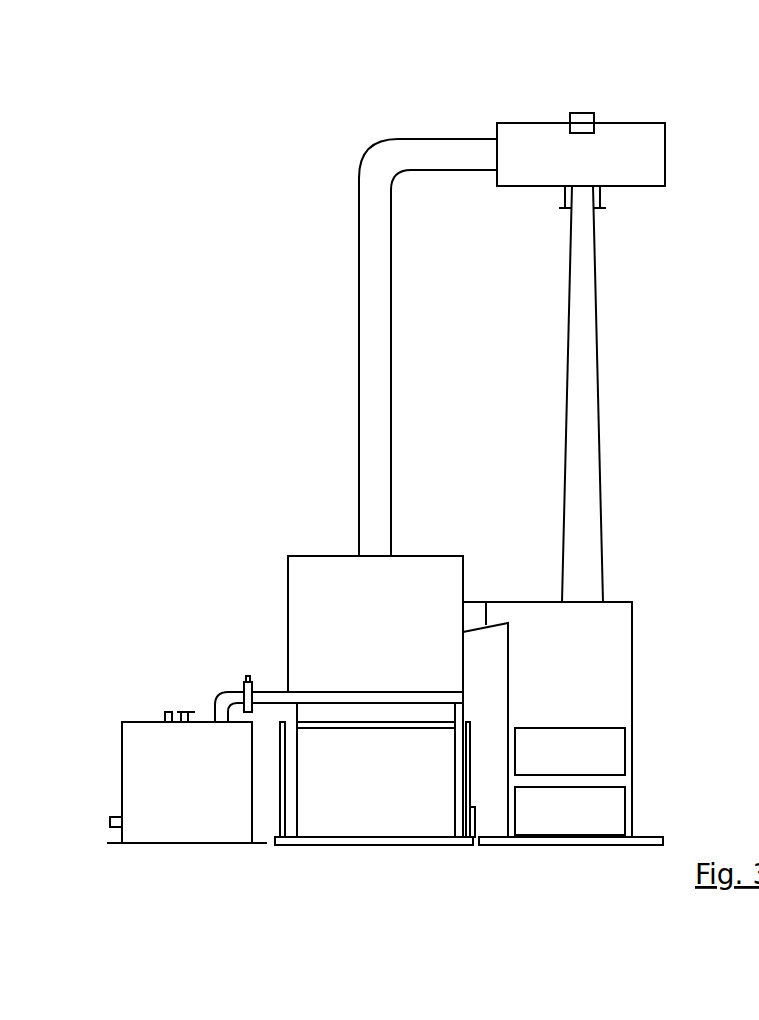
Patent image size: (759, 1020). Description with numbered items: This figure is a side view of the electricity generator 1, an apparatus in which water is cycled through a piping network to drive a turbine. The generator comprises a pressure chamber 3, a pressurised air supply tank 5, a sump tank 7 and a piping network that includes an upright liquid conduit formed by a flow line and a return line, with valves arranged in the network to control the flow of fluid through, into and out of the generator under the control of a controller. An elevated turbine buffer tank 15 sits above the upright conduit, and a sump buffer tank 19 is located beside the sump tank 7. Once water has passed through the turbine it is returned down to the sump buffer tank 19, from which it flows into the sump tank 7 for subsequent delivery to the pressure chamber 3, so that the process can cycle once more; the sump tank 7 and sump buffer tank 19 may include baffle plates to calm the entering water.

The electricity generator 1 is at (271, 138).
The pressure chamber 3 is at (448, 755).
The pressurised air supply tank 5 is at (133, 750).
The sump tank 7 is at (296, 597).
The elevated turbine buffer tank 15 is at (632, 128).
The sump buffer tank 19 is at (600, 632).